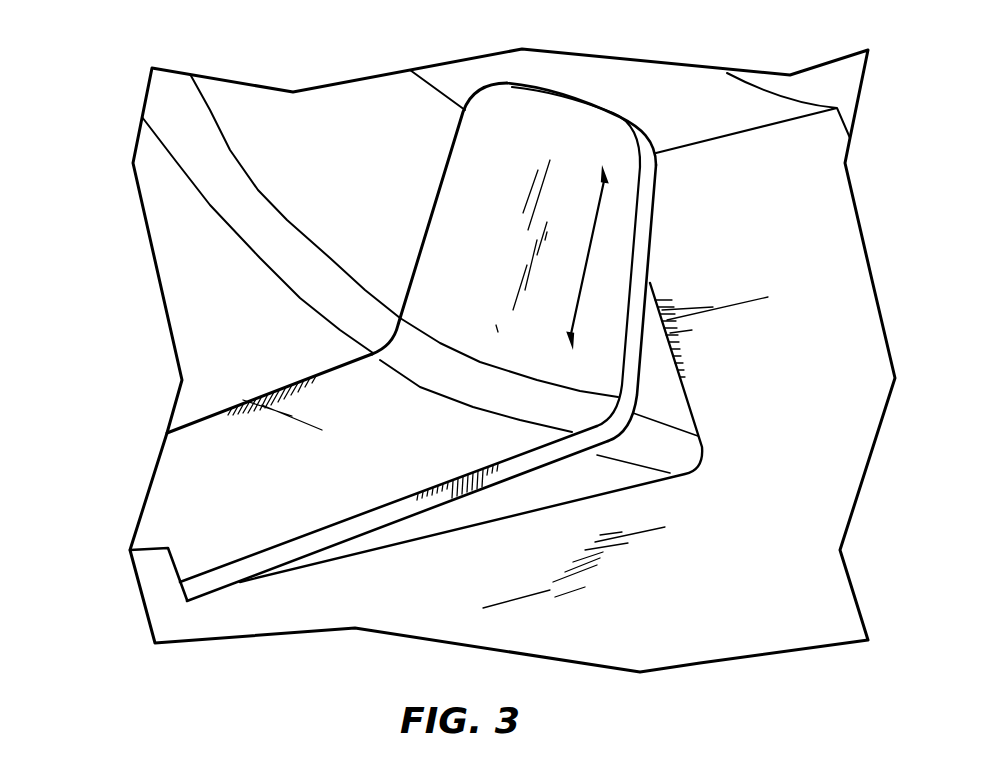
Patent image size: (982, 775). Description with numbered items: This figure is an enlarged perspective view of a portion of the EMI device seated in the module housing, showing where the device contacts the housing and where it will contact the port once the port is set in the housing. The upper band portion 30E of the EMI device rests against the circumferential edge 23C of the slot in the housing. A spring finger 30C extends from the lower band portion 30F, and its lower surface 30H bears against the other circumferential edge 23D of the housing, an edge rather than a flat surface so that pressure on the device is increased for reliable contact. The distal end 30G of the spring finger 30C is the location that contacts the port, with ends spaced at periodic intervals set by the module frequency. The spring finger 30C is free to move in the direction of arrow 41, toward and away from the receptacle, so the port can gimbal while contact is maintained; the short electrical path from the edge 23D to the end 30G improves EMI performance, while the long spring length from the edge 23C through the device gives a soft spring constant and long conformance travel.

The circumferential edge 23C is at (180, 565).
The circumferential edge 23D is at (660, 382).
The spring finger 30C is at (442, 255).
The upper band portion 30E is at (218, 457).
The lower band portion 30F is at (377, 393).
The distal end 30G is at (547, 102).
The lower surface 30H is at (650, 125).
The arrow 41 is at (592, 229).